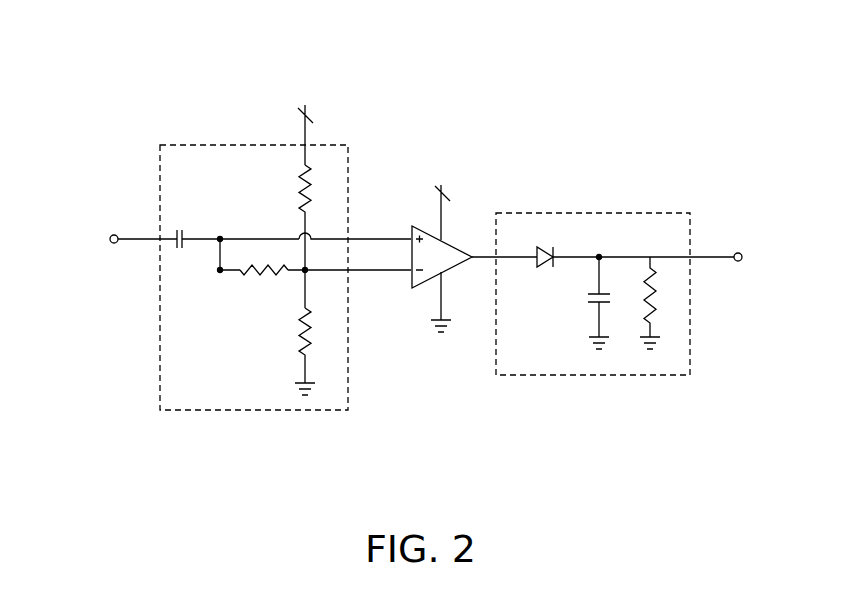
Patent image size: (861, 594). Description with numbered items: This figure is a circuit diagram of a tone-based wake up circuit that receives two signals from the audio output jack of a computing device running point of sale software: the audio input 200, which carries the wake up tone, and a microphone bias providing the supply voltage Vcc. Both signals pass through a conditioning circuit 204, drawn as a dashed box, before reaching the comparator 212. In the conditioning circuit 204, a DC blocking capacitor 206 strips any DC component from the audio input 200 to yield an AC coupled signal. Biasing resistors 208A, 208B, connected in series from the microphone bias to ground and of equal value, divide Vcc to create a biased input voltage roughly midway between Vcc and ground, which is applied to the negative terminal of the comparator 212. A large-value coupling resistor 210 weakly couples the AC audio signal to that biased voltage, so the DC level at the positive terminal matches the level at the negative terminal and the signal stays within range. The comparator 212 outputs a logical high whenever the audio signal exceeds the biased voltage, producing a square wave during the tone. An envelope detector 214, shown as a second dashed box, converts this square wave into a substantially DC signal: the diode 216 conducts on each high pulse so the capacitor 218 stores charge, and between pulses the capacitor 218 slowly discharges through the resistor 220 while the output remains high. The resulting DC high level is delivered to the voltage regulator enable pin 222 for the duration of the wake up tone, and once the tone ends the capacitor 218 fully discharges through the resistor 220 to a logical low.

The audio input 200 is at (104, 239).
The conditioning circuit 204 is at (187, 414).
The DC blocking capacitor 206 is at (181, 228).
The biasing resistor 208A is at (298, 188).
The biasing resistor 208B is at (292, 333).
The coupling resistor 210 is at (267, 283).
The comparator 212 is at (424, 290).
The envelope detector 214 is at (533, 379).
The diode 216 is at (547, 245).
The capacitor 218 is at (581, 297).
The resistor 220 is at (661, 291).
The voltage regulator enable pin 222 is at (748, 257).